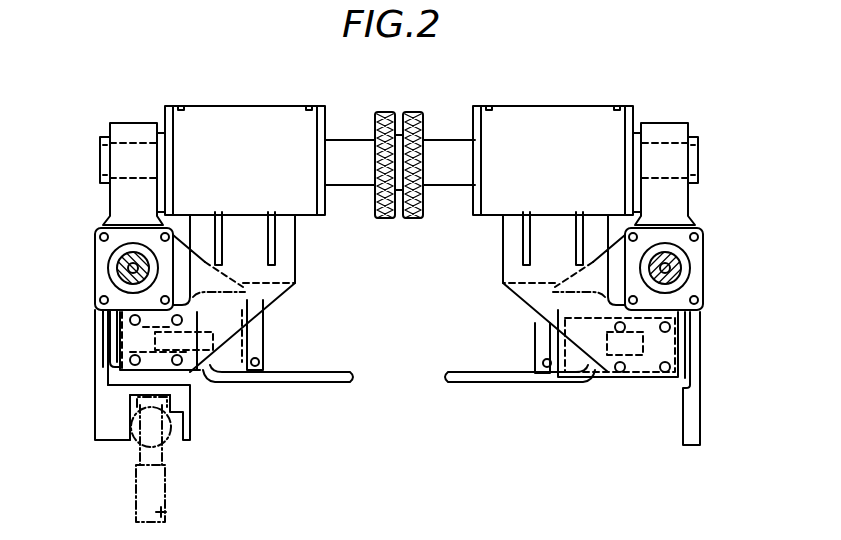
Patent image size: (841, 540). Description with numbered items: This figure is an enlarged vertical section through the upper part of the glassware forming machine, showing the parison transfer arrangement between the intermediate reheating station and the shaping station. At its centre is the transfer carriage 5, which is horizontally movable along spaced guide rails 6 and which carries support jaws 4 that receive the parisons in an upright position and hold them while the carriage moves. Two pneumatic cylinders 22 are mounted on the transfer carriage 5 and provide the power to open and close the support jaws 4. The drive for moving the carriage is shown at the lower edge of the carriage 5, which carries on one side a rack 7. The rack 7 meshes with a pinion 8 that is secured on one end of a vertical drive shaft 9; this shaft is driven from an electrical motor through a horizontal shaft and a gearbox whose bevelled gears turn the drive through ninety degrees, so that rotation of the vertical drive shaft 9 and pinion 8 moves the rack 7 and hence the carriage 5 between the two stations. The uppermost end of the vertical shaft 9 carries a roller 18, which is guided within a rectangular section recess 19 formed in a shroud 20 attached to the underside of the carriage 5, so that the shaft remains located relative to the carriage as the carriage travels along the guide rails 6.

The support jaws 4 is at (317, 377).
The transfer carriage 5 is at (700, 128).
The guide rails 6 is at (123, 264).
The rack 7 is at (120, 440).
The pinion 8 is at (170, 452).
The vertical drive shaft 9 is at (165, 513).
The roller 18 is at (163, 402).
The rectangular section recess 19 is at (133, 405).
The shroud 20 is at (188, 433).
The pneumatic cylinders 22 is at (307, 214).